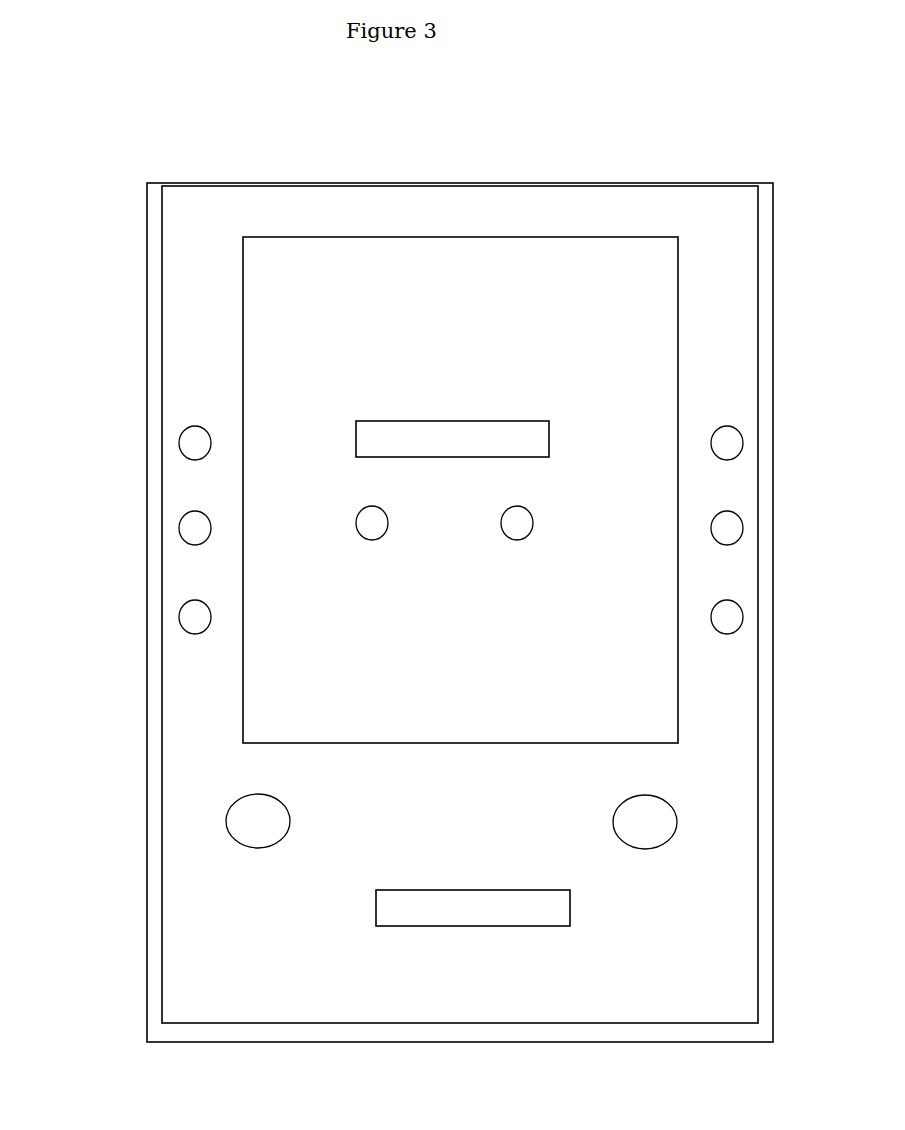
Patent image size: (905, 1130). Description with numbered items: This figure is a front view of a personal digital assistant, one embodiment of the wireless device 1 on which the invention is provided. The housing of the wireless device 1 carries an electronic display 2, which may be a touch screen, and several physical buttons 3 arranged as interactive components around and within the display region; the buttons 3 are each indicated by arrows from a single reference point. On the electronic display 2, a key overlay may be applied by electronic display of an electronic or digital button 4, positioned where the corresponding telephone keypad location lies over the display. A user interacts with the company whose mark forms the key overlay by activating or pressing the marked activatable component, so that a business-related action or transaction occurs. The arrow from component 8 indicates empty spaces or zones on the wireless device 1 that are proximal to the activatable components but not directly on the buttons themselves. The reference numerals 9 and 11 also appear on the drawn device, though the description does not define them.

The wireless device 1 is at (460, 576).
The electronic display 2 is at (425, 233).
The physical buttons 3 is at (713, 458).
The electronic or digital button 4 is at (446, 419).
The component indicating empty spaces or zones 8 is at (654, 945).
The lower slot 9 is at (468, 931).
The inner wall 11 is at (147, 277).